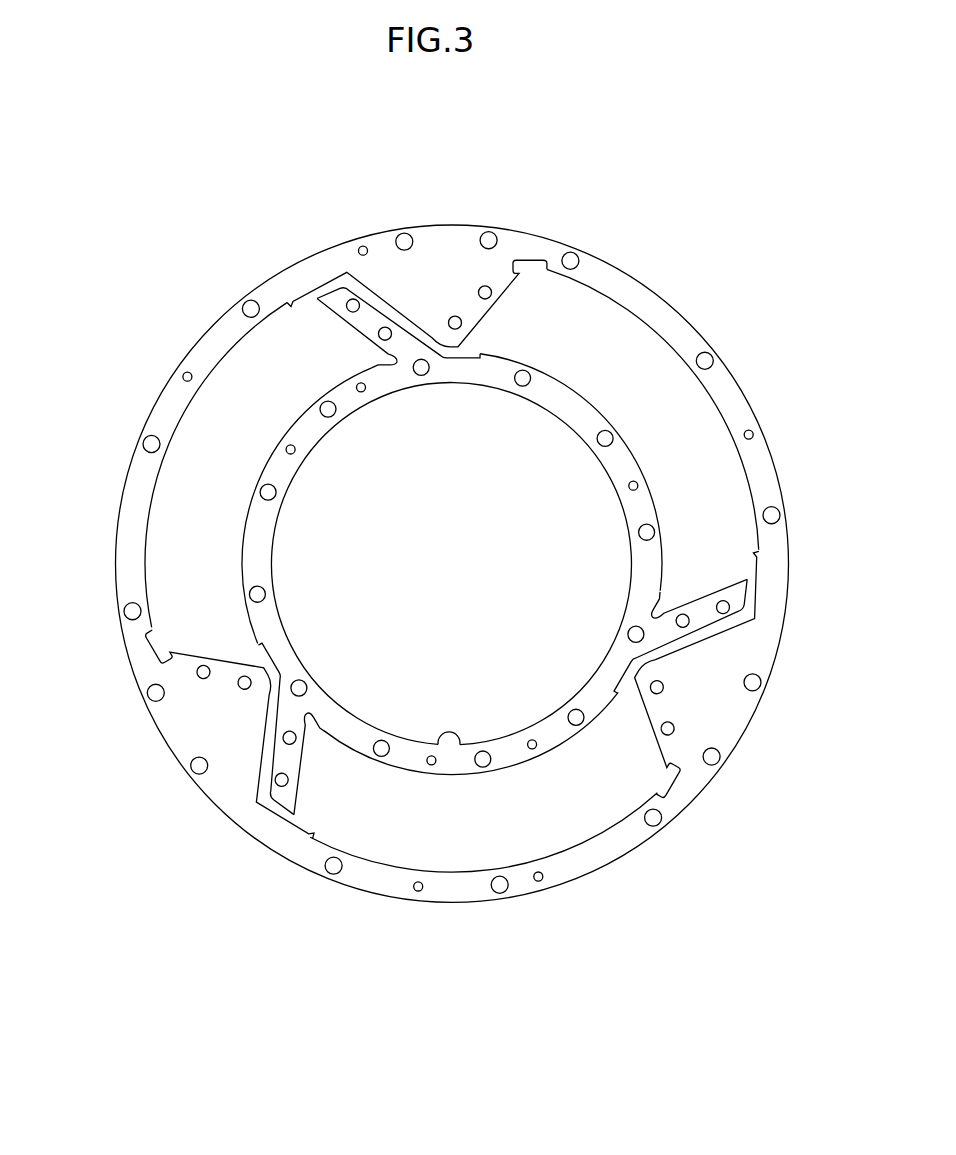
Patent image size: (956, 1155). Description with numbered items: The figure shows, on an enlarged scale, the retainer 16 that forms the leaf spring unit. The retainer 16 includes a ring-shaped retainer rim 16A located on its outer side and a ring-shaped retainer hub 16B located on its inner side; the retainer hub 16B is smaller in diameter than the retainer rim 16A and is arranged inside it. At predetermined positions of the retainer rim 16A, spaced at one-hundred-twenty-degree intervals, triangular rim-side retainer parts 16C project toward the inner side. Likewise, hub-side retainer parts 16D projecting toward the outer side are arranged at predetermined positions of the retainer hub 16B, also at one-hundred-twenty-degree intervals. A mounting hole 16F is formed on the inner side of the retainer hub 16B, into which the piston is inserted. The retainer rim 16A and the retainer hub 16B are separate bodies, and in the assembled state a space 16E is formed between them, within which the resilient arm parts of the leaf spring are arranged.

The retainer 16 is at (690, 147).
The retainer rim 16A is at (737, 402).
The retainer hub 16B is at (615, 467).
The rim-side retainer parts 16C is at (475, 310).
The hub-side retainer parts 16D is at (370, 322).
The space 16E is at (642, 353).
The mounting hole 16F is at (460, 741).